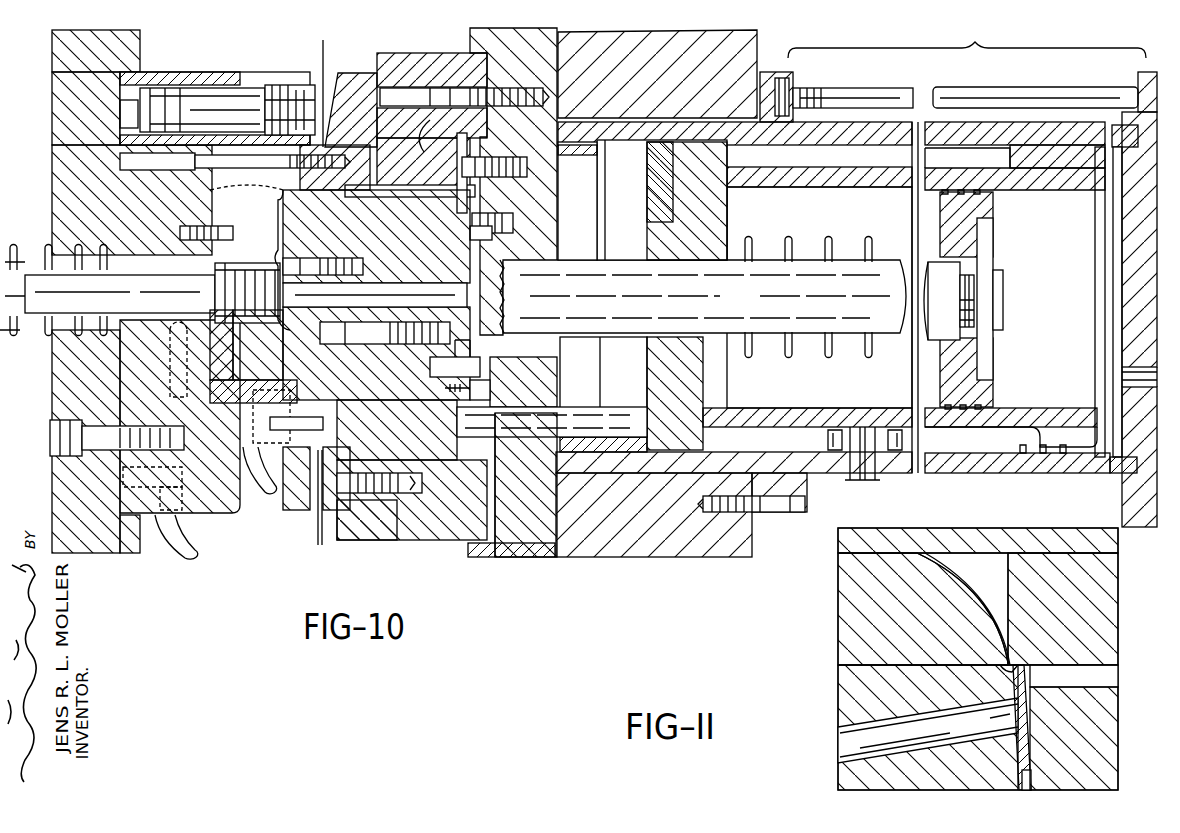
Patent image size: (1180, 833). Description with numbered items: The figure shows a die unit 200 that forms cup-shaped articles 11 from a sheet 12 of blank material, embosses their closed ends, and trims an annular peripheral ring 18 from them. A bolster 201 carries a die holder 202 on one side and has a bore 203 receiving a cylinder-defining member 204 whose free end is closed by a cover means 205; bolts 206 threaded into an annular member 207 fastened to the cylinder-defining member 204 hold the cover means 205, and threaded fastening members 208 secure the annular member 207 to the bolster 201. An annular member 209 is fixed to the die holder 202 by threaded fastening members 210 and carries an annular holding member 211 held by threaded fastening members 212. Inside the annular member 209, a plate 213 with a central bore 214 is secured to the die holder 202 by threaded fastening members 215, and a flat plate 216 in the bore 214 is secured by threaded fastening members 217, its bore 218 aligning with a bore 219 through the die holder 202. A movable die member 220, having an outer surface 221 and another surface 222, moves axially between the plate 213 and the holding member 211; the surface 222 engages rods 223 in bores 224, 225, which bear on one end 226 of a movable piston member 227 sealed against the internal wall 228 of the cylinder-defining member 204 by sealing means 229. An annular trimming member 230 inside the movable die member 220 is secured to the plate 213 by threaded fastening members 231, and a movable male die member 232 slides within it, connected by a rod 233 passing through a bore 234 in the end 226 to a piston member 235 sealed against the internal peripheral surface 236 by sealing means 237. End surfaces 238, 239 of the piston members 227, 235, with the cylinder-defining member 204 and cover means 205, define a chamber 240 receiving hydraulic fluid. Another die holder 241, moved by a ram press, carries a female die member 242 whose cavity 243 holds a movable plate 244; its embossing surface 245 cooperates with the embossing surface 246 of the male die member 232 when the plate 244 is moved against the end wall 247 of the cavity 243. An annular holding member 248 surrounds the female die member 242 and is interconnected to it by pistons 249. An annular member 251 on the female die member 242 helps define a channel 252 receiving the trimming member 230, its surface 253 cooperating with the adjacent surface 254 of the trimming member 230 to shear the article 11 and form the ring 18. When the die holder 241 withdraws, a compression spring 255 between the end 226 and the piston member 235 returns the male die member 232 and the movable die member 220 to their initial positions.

In FIG. 10, the die holder 241 is at (138, 66).
In FIG. 10, the pistons 249 is at (204, 100).
In FIG. 10, the female die member 242 is at (238, 130).
In FIG. 10, the annular holding member 248 is at (298, 86).
In FIG. 10, the sheet of blank material 12 is at (322, 42).
In FIG. 10, the annular holding member 211 is at (348, 74).
In FIG. 10, the annular member 209 is at (405, 64).
In FIG. 10, the annular trimming member 230 is at (418, 196).
In FIG. 10, the movable die member 220 is at (428, 140).
In FIG. 10, the outer surface 221 is at (386, 200).
In FIG. 10, the threaded fastening members 210 is at (504, 90).
In FIG. 10, the threaded fastening members 215 is at (512, 158).
In FIG. 10, the plate 213 is at (490, 178).
In FIG. 10, the central bore 214 is at (498, 226).
In FIG. 10, the threaded fastening members 217 is at (505, 240).
In FIG. 10, the bolster 201 is at (742, 40).
In FIG. 10, the bore 203 is at (672, 122).
In FIG. 10, the annular member 207 is at (785, 80).
In FIG. 10, the bolts 206 is at (874, 96).
In FIG. 10, the end surface 238 is at (1100, 170).
In FIG. 10, the chamber 240 is at (1040, 300).
In FIG. 10, the cover means 205 is at (1122, 490).
In FIG. 10, the internal peripheral surface 236 is at (813, 176).
In FIG. 10, the internal wall 228 is at (946, 150).
In FIG. 10, the movable piston member 227 is at (726, 195).
In FIG. 10, the rod 233 is at (756, 338).
In FIG. 10, the compression spring 255 is at (806, 240).
In FIG. 10, the bore 234 is at (652, 262).
In FIG. 10, the end 226 is at (640, 386).
In FIG. 10, the bore 219 is at (540, 246).
In FIG. 10, the cylinder-defining member 204 is at (630, 470).
In FIG. 10, the sealing means 229 is at (1022, 456).
In FIG. 10, the sealing means 237 is at (987, 200).
In FIG. 10, the end surface 239 is at (996, 398).
In FIG. 10, the piston member 235 is at (998, 250).
In FIG. 10, the embossing surface 245 is at (224, 278).
In FIG. 10, the cavity 243 is at (275, 198).
In FIG. 10, the movable plate 244 is at (190, 242).
In FIG. 10, the movable male die member 232 is at (332, 216).
In FIG. 10, the cup-shaped article 11 is at (345, 210).
In FIG. 11, the cup-shaped article 11 is at (970, 575).
In FIG. 10, the embossing surface 246 is at (284, 310).
In FIG. 10, the end wall 247 is at (222, 342).
In FIG. 10, the bore 218 is at (478, 360).
In FIG. 10, the flat plate 216 is at (490, 366).
In FIG. 10, the threaded fastening members 231 is at (496, 390).
In FIG. 10, the annular member 251 is at (355, 450).
In FIG. 10, the other surface 222 is at (460, 440).
In FIG. 10, the rods 223 is at (540, 440).
In FIG. 10, the bore 225 is at (540, 442).
In FIG. 10, the die holder 202 is at (538, 558).
In FIG. 10, the bore 224 is at (424, 494).
In FIG. 10, the threaded fastening members 212 is at (390, 545).
In FIG. 10, the die unit 200 is at (300, 550).
In FIG. 11, the die unit 200 is at (815, 676).
In FIG. 10, the threaded fastening members 208 is at (772, 526).
In FIG. 11, the channel 252 is at (1012, 656).
In FIG. 11, the surface 253 is at (1005, 660).
In FIG. 11, the annular peripheral ring 18 is at (1030, 722).
In FIG. 11, the surface 254 is at (1043, 667).